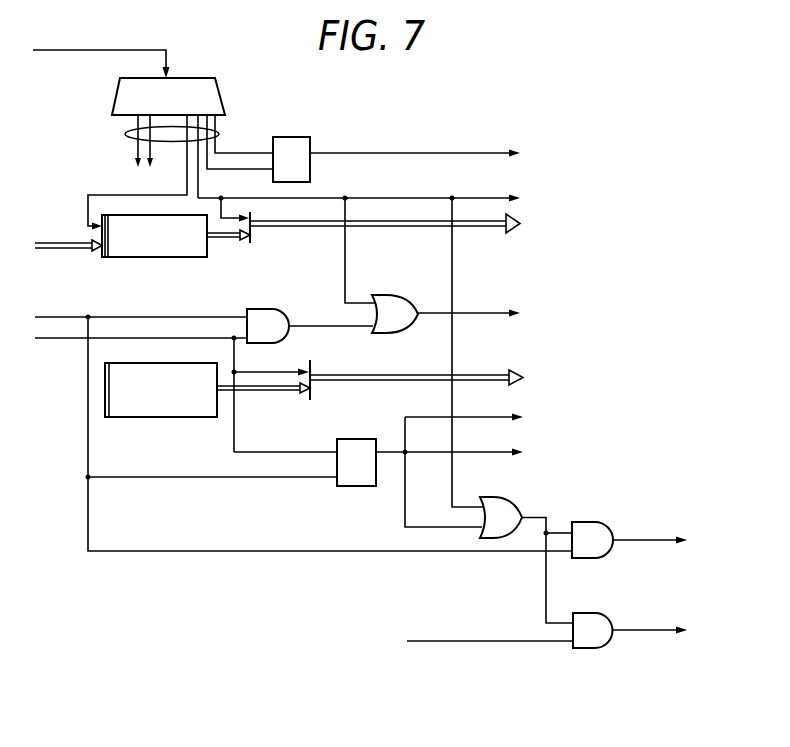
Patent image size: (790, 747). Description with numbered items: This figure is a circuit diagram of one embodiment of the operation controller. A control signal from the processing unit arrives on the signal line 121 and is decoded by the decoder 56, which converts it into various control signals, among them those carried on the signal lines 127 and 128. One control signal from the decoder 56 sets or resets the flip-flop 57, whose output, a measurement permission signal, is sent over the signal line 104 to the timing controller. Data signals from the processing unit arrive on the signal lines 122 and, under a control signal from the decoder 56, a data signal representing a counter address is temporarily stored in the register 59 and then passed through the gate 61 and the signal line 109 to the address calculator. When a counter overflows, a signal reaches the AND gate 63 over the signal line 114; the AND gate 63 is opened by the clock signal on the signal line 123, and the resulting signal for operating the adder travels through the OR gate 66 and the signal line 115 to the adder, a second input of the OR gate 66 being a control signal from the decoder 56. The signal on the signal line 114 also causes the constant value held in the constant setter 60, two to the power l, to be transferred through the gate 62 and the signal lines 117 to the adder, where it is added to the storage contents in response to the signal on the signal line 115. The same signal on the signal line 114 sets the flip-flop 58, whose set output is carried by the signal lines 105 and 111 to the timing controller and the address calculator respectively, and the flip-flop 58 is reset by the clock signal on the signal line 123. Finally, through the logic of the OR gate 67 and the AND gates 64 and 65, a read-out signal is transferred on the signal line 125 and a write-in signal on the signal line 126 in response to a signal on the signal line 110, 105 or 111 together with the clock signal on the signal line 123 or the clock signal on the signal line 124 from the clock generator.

The decoder 56 is at (220, 91).
The flip-flop 57 is at (292, 137).
The flip-flop 58 is at (345, 487).
The register 59 is at (160, 257).
The constant setter 60 is at (155, 417).
The gate 61 is at (253, 241).
The gate 62 is at (315, 367).
The AND gate 63 is at (265, 309).
The AND gate 64 is at (600, 523).
The AND gate 65 is at (600, 623).
The OR gate 66 is at (402, 303).
The OR gate 67 is at (507, 507).
The signal line 104 is at (488, 150).
The signal line 105 is at (475, 416).
The signal line 109 is at (488, 229).
The signal line 110 is at (487, 195).
The signal line 111 is at (472, 451).
The signal line 114 is at (67, 339).
The signal line 115 is at (485, 311).
The signal lines 117 is at (478, 374).
The signal line 121 is at (92, 48).
The signal lines 122 is at (73, 243).
The signal line 123 is at (63, 317).
The signal line 124 is at (495, 640).
The signal line 125 is at (657, 538).
The signal line 126 is at (653, 630).
The signal lines 127 is at (128, 134).
The signal lines 128 is at (140, 151).